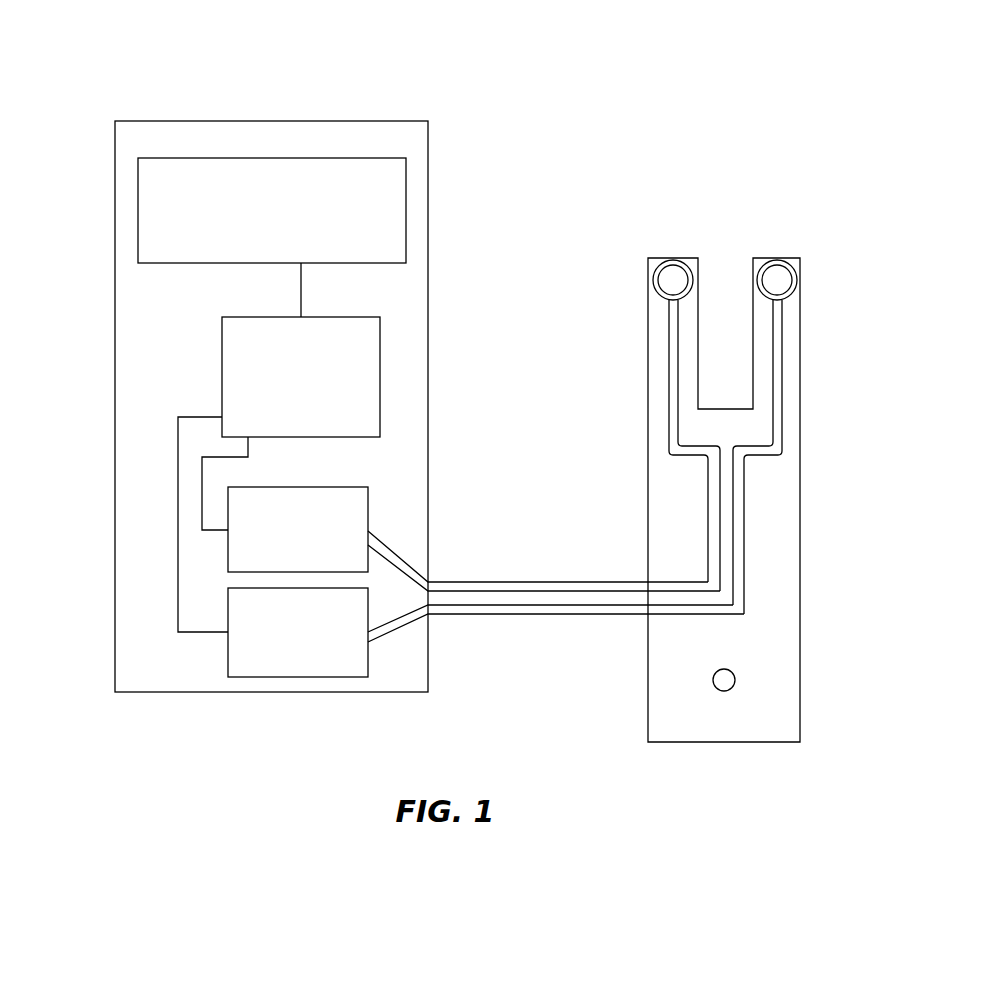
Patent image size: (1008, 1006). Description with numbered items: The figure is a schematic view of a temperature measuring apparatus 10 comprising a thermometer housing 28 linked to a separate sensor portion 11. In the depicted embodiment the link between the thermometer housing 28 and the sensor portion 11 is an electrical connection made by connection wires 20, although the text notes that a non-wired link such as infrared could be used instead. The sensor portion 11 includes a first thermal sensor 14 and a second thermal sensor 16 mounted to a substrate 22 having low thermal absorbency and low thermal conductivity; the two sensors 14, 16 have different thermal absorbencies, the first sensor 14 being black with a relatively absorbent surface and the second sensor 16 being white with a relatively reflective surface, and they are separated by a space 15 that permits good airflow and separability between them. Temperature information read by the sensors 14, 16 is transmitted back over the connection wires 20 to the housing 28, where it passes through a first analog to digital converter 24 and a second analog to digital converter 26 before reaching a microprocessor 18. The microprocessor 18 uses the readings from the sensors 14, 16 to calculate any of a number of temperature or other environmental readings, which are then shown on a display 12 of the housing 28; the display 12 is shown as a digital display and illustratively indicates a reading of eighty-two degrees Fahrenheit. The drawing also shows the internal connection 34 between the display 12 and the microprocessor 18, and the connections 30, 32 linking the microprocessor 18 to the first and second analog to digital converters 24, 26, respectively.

The temperature measuring apparatus 10 is at (190, 49).
The sensor portion 11 is at (734, 515).
The display 12 is at (406, 218).
The first thermal sensor 14 is at (660, 295).
The space 15 is at (722, 264).
The second thermal sensor 16 is at (794, 272).
The microprocessor 18 is at (380, 425).
The connection wires 20 is at (482, 586).
The substrate 22 is at (812, 494).
The first analog to digital converter 24 is at (368, 507).
The second analog to digital converter 26 is at (358, 677).
The thermometer housing 28 is at (216, 702).
The first bus 30 is at (202, 498).
The second bus 32 is at (178, 455).
The display connection 34 is at (318, 297).